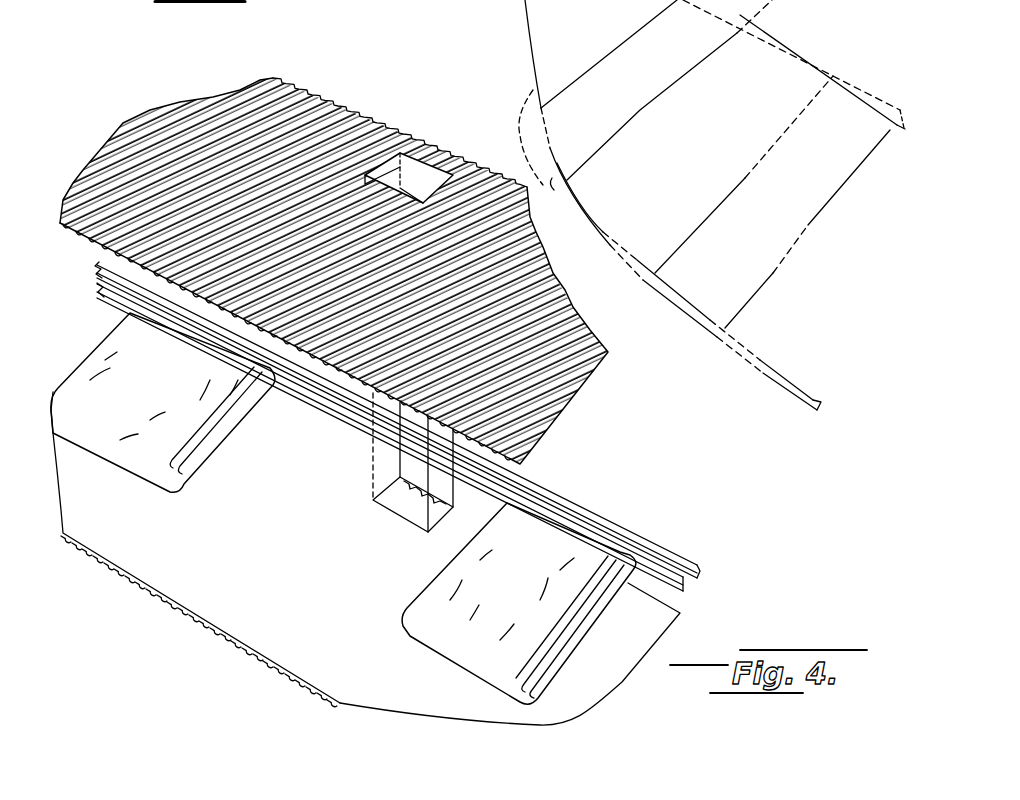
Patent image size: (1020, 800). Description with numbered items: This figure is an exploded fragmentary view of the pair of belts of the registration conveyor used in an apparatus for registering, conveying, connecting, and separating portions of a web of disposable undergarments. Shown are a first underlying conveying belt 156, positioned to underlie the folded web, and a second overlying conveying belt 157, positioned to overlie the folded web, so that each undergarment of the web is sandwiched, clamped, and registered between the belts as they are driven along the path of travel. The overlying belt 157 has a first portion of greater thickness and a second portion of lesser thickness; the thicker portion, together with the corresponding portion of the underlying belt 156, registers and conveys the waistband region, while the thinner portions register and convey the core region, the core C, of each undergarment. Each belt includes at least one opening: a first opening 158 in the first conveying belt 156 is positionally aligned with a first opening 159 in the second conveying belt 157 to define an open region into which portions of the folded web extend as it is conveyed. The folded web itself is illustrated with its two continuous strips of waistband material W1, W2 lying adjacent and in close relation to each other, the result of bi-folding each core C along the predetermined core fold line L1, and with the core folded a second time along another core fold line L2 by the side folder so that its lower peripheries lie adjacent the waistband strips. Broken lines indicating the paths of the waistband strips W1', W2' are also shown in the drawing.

The first underlying conveying belt 156 is at (653, 630).
The second overlying conveying belt 157 is at (588, 361).
The first opening 158 is at (437, 513).
The first opening 159 is at (422, 170).
The continuous strip of waistband material W1 is at (437, 439).
The continuous strip of waistband material W2 is at (434, 420).
The first web path W1' is at (781, 129).
The second web path W2' is at (762, 368).
The core fold line L1 is at (620, 570).
The core fold line L2 is at (173, 486).
The core C is at (789, 233).